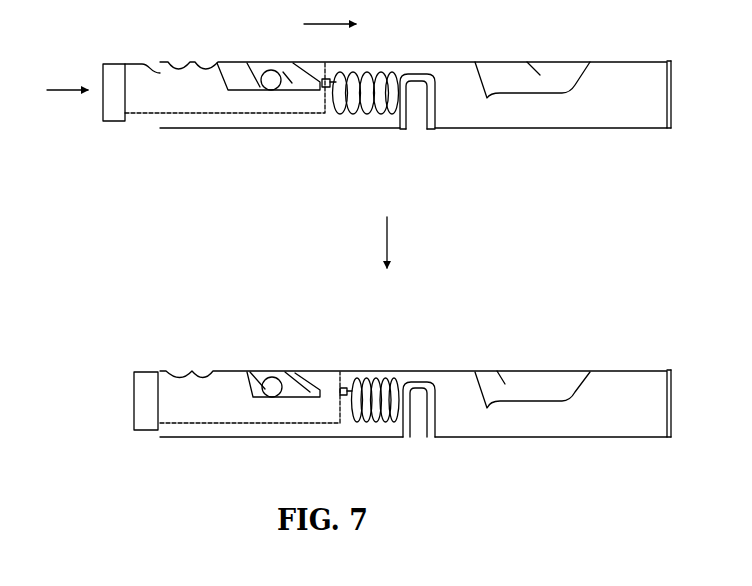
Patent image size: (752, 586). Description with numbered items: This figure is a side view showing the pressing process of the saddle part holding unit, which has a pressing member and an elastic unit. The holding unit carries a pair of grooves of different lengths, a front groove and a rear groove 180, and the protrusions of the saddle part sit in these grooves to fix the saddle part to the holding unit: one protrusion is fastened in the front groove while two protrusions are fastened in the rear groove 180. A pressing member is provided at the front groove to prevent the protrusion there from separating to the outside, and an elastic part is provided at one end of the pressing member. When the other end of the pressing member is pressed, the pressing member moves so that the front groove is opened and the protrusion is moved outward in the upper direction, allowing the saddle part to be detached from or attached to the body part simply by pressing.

The rear groove 180 is at (540, 75).